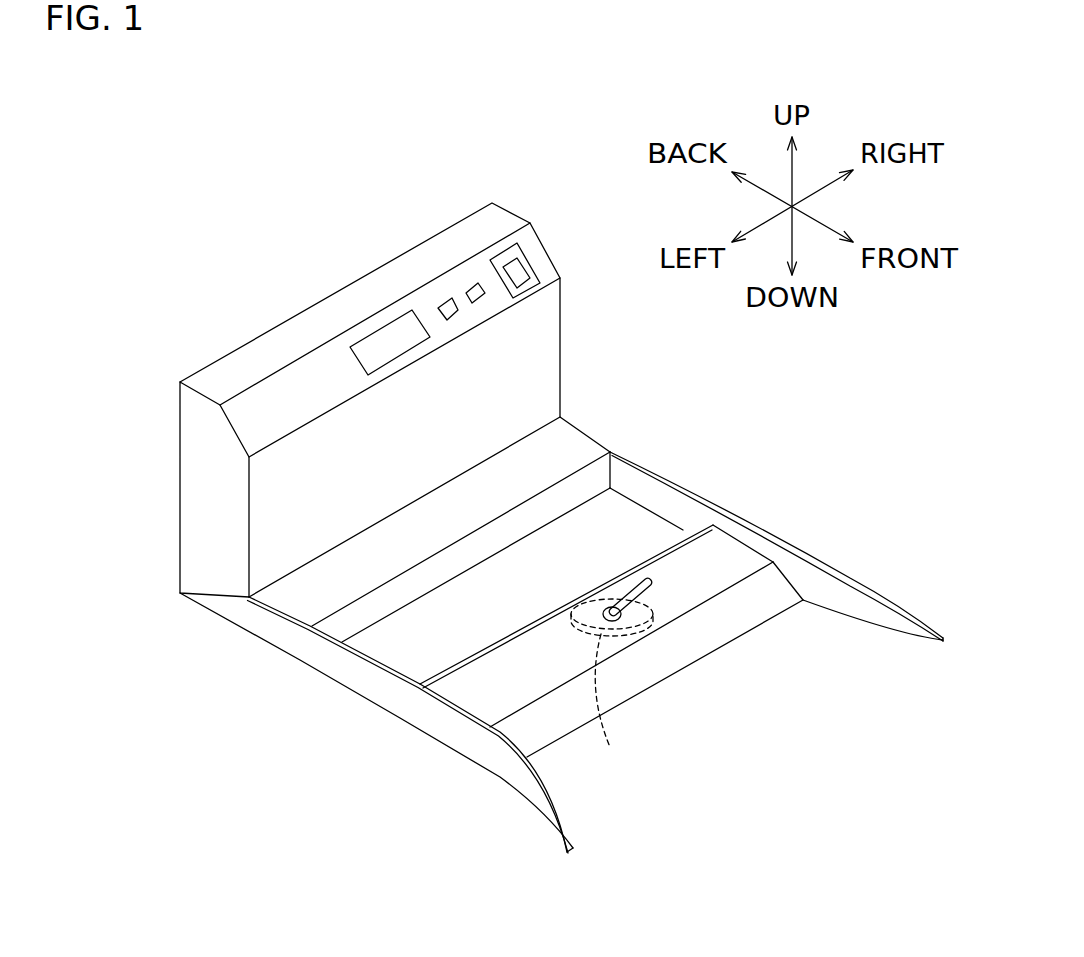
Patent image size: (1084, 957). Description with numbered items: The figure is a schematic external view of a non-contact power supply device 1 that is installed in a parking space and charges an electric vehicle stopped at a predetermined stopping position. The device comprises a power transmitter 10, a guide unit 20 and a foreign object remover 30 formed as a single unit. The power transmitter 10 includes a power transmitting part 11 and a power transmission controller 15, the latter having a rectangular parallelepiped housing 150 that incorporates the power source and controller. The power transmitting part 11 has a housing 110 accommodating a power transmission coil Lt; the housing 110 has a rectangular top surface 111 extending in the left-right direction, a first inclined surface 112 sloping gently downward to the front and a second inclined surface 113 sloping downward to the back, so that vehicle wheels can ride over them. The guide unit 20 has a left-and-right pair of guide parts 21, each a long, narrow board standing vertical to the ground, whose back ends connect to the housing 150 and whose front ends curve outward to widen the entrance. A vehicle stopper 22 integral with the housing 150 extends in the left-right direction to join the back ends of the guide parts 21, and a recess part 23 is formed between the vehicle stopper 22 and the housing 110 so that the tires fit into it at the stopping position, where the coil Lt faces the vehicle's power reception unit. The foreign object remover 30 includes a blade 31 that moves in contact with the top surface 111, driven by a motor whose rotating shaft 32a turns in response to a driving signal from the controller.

The non-contact power supply device 1 is at (312, 182).
The power transmitter 10 is at (155, 382).
The power transmission controller 15 is at (307, 308).
The housing 150 is at (188, 450).
The guide unit 20 is at (505, 823).
The guide part 21 is at (340, 667).
The vehicle stopper 22 is at (558, 462).
The recess part 23 is at (612, 515).
The housing 110 is at (750, 430).
The top surface 111 is at (733, 550).
The first inclined surface 112 is at (770, 588).
The second inclined surface 113 is at (687, 530).
The power transmitting part 11 is at (632, 658).
The foreign object remover 30 is at (672, 590).
The blade 31 is at (645, 595).
The rotating shaft 32a is at (636, 632).
The power transmission coil Lt is at (612, 706).